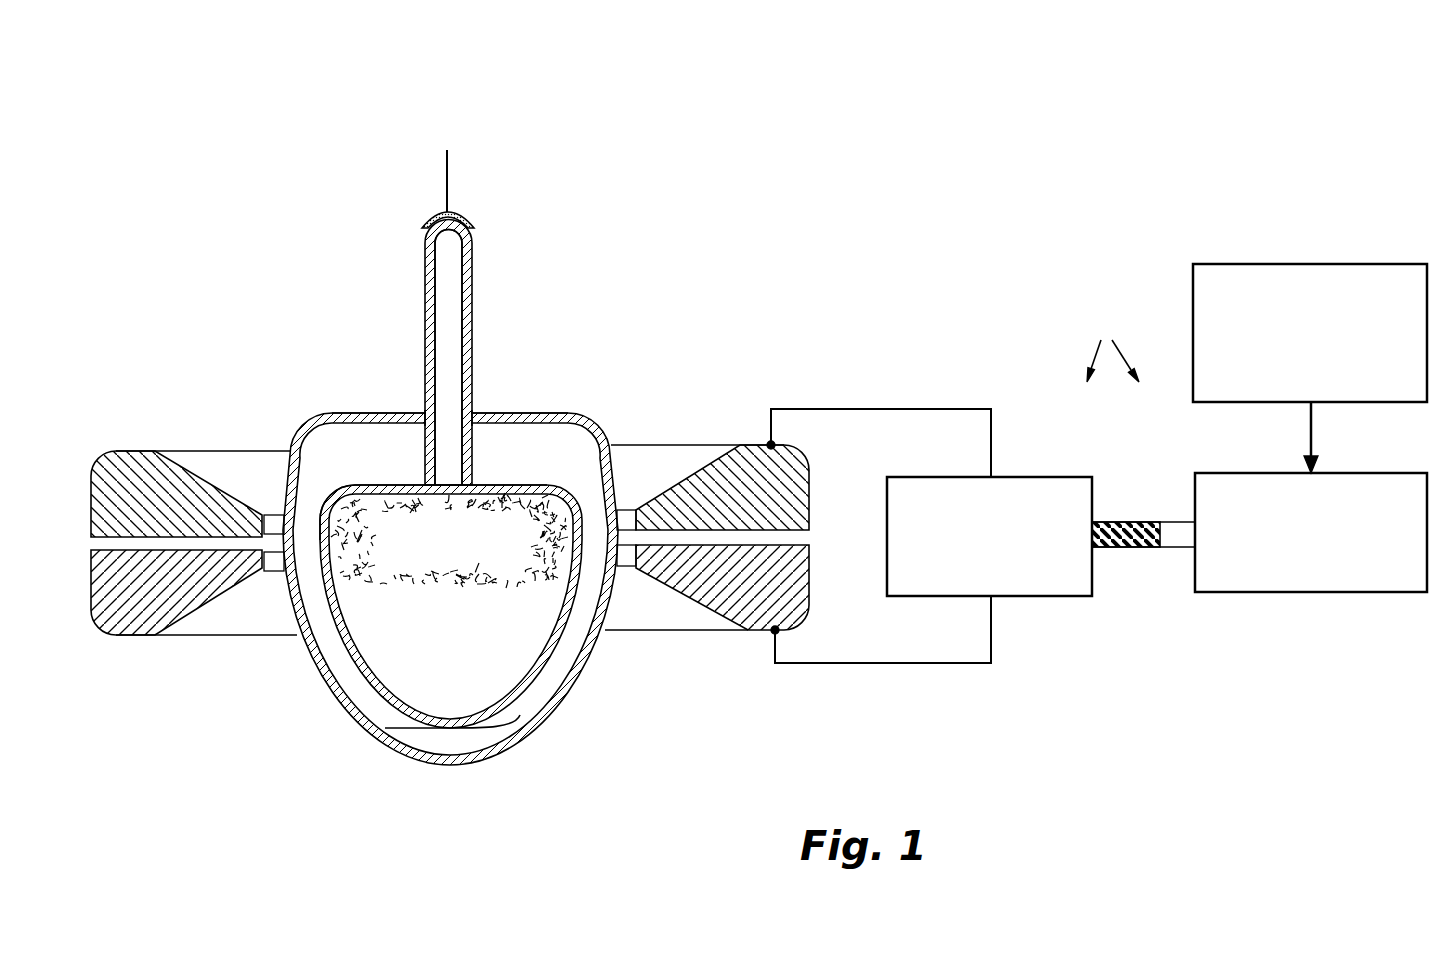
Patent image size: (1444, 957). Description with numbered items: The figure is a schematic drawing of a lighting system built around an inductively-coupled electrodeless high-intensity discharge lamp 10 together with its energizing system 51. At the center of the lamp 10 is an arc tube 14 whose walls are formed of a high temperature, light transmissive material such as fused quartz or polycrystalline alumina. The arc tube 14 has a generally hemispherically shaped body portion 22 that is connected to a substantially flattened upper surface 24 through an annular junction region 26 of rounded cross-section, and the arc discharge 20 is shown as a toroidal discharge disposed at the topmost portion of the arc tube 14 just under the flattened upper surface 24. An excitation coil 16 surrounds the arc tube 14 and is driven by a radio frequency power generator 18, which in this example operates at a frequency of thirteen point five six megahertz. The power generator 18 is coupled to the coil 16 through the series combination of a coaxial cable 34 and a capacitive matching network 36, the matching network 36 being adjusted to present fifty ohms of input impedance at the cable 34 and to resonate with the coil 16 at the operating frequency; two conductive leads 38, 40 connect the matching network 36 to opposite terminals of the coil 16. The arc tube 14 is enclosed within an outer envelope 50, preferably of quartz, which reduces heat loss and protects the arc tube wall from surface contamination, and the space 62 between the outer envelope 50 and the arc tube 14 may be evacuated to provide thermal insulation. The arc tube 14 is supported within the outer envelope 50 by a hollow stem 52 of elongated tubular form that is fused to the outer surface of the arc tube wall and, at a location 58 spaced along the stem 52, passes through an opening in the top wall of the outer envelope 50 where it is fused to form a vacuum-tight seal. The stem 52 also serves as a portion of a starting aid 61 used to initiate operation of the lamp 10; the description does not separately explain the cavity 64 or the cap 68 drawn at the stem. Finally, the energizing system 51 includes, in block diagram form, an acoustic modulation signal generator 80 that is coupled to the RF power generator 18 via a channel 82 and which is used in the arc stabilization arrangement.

The discharge lamp 10 is at (450, 480).
The arc tube 14 is at (440, 730).
The excitation coil 16 is at (665, 443).
The radio frequency (RF) power generator 18 is at (1215, 594).
The arc discharge 20 is at (527, 573).
The body portion 22 is at (393, 699).
The flattened upper surface 24 is at (510, 485).
The annular junction region 26 is at (329, 510).
The coaxial cable 34 is at (1132, 522).
The capacitive matching network 36 is at (1036, 477).
The conductive lead 38 is at (948, 408).
The conductive lead 40 is at (903, 664).
The outer envelope 50 is at (522, 745).
The energizing system 51 is at (1094, 329).
The hollow stem 52 is at (472, 313).
The location 58 is at (473, 415).
The starting aid 61 is at (429, 317).
The space 62 is at (548, 417).
The stem cavity 64 is at (450, 268).
The cap 68 is at (455, 213).
The acoustic modulation signal generator 80 is at (1192, 268).
The channel 82 is at (1308, 428).